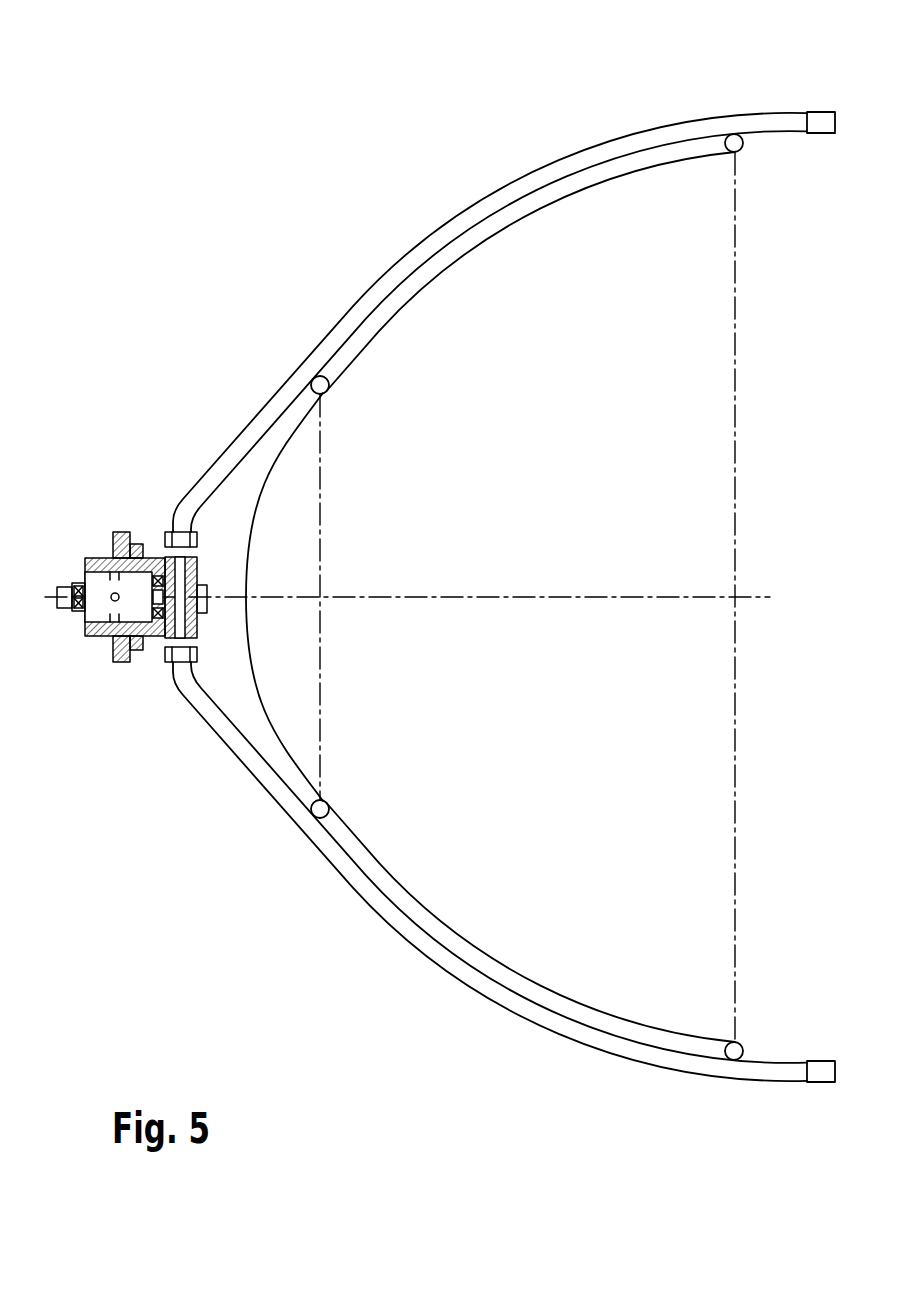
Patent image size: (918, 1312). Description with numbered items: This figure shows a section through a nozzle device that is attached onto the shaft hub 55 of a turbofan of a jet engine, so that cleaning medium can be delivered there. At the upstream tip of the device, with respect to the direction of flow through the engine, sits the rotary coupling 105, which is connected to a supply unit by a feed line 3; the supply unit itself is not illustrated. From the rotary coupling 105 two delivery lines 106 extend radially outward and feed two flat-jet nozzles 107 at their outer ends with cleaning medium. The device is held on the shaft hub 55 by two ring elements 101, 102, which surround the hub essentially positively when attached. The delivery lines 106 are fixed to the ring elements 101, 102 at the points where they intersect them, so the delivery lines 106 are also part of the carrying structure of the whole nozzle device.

The feed line 3 is at (64, 603).
The shaft hub 55 is at (700, 818).
The ring element 101 is at (740, 1060).
The ring element 102 is at (313, 814).
The rotary coupling 105 is at (125, 514).
The delivery line 106 is at (440, 237).
The flat-jet nozzle 107 is at (822, 122).